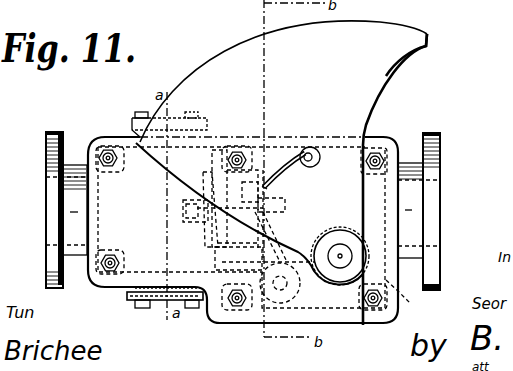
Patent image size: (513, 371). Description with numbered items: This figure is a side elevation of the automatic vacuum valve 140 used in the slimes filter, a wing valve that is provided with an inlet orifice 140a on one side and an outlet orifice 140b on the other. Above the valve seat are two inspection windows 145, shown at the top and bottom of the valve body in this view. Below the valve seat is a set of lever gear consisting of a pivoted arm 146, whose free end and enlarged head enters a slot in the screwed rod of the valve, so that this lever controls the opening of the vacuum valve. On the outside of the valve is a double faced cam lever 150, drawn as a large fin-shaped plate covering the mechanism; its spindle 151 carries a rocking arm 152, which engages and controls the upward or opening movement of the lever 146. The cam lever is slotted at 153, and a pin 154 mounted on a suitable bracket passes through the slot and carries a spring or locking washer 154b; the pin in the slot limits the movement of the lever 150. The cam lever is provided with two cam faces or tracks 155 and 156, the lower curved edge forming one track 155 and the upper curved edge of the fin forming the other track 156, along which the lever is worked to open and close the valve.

The automatic vacuum valve 140 is at (243, 230).
The inlet orifice 140a is at (46, 212).
The outlet orifice 140b is at (440, 204).
The inspection windows 145 is at (133, 127).
The pivoted arm 146 is at (278, 208).
The double faced cam lever 150 is at (283, 173).
The spindle 151 is at (412, 295).
The rocking arm 152 is at (316, 246).
The slot 153 is at (286, 170).
The pin 154 is at (318, 165).
The spring or locking washer 154b is at (305, 148).
The cam face or track 155 is at (190, 178).
The cam face or track 156 is at (405, 52).